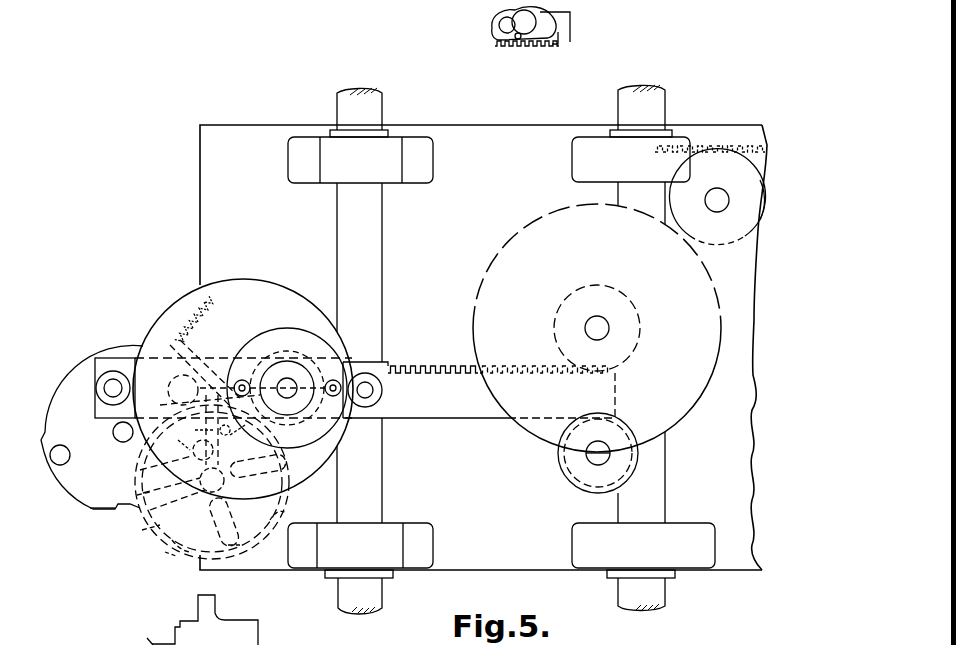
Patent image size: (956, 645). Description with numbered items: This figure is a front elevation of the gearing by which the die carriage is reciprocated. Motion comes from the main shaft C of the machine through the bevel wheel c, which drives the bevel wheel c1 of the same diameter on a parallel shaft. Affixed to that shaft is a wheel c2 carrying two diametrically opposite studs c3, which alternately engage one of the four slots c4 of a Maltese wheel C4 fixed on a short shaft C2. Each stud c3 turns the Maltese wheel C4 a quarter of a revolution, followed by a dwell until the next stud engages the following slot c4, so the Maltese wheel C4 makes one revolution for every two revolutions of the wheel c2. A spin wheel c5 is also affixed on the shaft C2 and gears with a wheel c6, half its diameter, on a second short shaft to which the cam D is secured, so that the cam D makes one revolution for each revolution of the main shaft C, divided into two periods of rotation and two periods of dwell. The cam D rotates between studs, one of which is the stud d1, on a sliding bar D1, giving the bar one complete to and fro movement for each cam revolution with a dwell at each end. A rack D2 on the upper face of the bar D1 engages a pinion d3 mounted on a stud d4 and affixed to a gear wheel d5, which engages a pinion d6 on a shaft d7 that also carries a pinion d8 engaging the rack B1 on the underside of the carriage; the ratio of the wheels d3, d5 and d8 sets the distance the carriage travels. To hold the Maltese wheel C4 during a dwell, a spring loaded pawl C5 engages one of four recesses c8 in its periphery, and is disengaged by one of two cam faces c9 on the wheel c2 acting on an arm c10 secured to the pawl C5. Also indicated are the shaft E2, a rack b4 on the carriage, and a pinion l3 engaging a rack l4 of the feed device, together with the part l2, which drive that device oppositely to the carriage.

The rack B1 is at (716, 145).
The shaft d7 is at (726, 204).
The pinion d6 is at (726, 247).
The pinion d8 is at (765, 222).
The gear wheel d5 is at (700, 390).
The pinion d3 is at (646, 322).
The stud d4 is at (597, 330).
The rack D2 is at (470, 366).
The sliding bar D1 is at (97, 358).
The stud d1 is at (113, 372).
The shaft E2 is at (501, 349).
The cam D is at (352, 482).
The wheel c6 is at (283, 350).
The spring loaded pawl C5 is at (222, 385).
The cam face c9 is at (148, 348).
The stud c3 is at (58, 494).
The recess c8 is at (180, 582).
The arm c10 is at (202, 422).
The bevel wheel c is at (190, 535).
The short shaft C2 is at (212, 482).
The slot c4 is at (290, 464).
The Maltese wheel C4 is at (180, 540).
The spin wheel c5 is at (150, 525).
The wheel c2 is at (72, 398).
The bevel wheel c1 is at (114, 437).
The main shaft C is at (276, 644).
The pinion l3 is at (496, 26).
The lever arm l2 is at (570, 12).
The rack l4 is at (495, 46).
The rack b4 is at (544, 48).